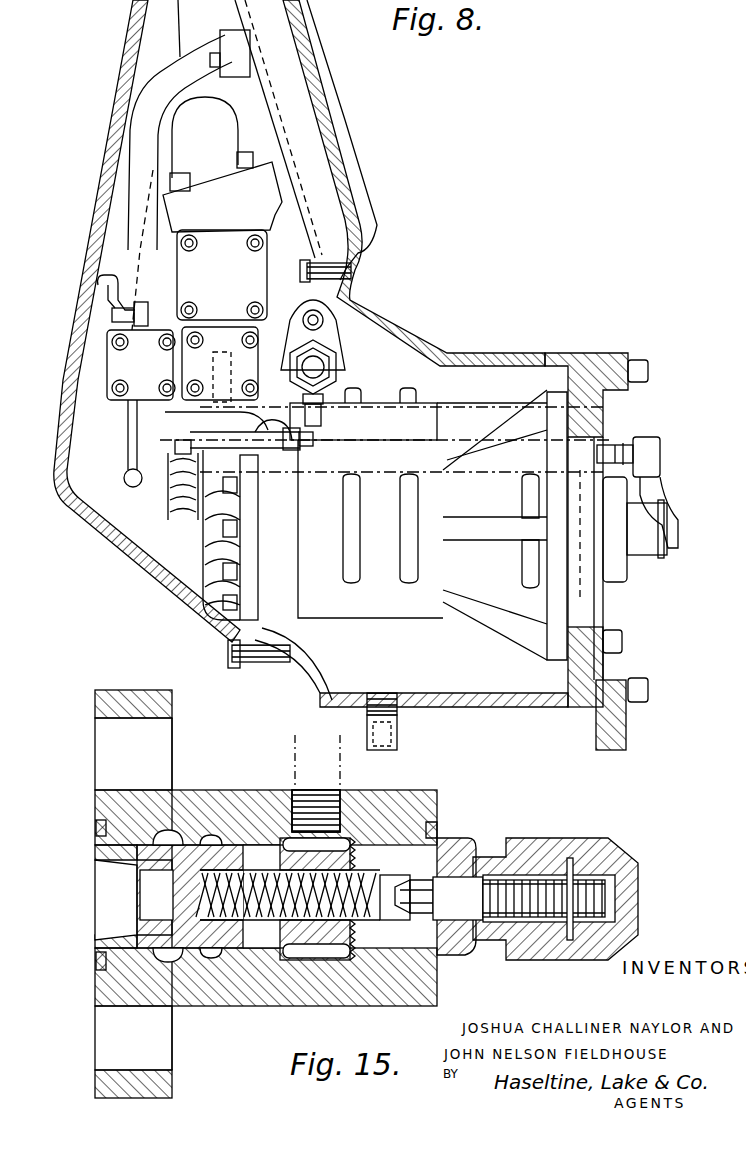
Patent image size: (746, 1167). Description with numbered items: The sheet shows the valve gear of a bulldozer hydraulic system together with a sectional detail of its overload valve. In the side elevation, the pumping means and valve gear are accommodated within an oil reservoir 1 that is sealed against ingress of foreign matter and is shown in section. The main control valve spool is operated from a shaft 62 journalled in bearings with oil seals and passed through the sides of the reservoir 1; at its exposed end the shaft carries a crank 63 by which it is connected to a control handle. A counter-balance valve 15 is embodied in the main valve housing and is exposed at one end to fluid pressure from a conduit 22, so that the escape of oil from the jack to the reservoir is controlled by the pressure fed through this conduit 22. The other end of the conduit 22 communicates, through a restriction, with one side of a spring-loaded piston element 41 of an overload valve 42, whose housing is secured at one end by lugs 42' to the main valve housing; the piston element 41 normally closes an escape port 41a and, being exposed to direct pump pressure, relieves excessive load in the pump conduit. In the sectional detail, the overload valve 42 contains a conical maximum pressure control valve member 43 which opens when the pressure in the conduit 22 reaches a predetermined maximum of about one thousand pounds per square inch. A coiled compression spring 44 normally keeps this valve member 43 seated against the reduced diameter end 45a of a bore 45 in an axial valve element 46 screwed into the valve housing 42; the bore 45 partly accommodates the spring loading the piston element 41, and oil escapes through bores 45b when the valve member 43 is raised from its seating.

In FIG. 8, the oil reservoir 1 is at (110, 522).
In FIG. 8, the counter-balance valve 15 is at (112, 372).
In FIG. 8, the conduit 22 is at (96, 288).
In FIG. 15, the conduit 22 is at (295, 749).
In FIG. 8, the overload valve 42 is at (350, 367).
In FIG. 15, the overload valve 42 is at (266, 886).
In FIG. 8, the lugs 42' is at (342, 324).
In FIG. 15, the lugs 42' is at (160, 876).
In FIG. 8, the shaft 62 is at (608, 443).
In FIG. 8, the crank 63 is at (676, 528).
In FIG. 15, the piston element 41 is at (190, 858).
In FIG. 15, the escape port 41a is at (165, 840).
In FIG. 15, the maximum pressure control valve member 43 is at (490, 858).
In FIG. 15, the coiled compression spring 44 is at (556, 860).
In FIG. 15, the bore 45 is at (352, 925).
In FIG. 15, the reduced diameter end 45a is at (420, 935).
In FIG. 15, the bores 45b is at (478, 858).
In FIG. 15, the axial valve element 46 is at (452, 972).